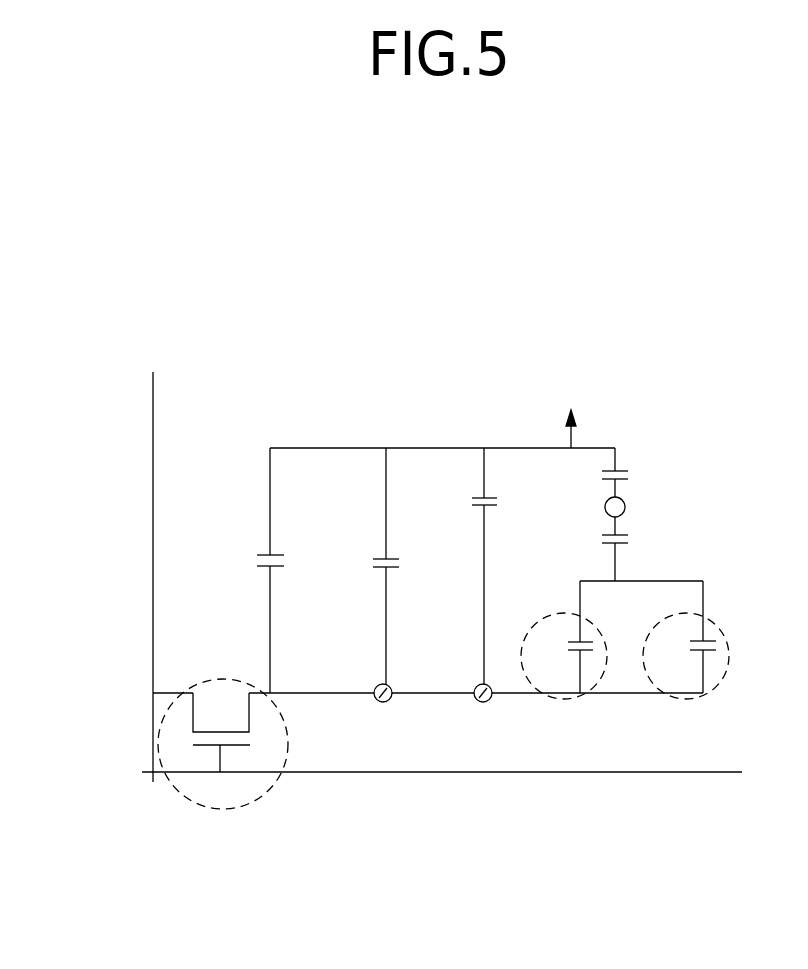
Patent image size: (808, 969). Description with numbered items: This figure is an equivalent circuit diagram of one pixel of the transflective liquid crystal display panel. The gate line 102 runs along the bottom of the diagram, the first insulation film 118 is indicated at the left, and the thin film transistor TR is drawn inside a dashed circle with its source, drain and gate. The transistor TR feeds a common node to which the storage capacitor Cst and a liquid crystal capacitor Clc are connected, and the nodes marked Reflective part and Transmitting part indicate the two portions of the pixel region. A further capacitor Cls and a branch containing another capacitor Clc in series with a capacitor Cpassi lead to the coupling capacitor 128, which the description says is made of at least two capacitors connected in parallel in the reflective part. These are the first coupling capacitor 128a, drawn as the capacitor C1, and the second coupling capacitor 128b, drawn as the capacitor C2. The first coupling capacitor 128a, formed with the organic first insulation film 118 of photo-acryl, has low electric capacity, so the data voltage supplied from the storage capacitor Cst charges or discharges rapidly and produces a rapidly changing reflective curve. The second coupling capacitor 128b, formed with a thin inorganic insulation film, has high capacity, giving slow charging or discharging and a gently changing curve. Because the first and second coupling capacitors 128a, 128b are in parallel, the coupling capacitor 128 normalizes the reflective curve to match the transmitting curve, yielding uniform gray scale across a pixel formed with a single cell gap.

The first insulation film 118 is at (153, 380).
The gate line 102 is at (742, 772).
The thin film transistor TR is at (178, 793).
The storage capacitor Cst is at (245, 570).
The liquid crystal capacitor Clc is at (528, 566).
The liquid crystal capacitor of slit portion Cls is at (509, 566).
The passivation layer capacitor Cpassi is at (666, 539).
The first capacitor C1 is at (564, 640).
The second capacitor C2 is at (686, 640).
The reflective part Reflective is at (378, 702).
The transmitting part Transmitting is at (478, 702).
The first coupling capacitor 128a is at (565, 700).
The second coupling capacitor 128b is at (688, 700).
The coupling capacitor 128 is at (692, 820).